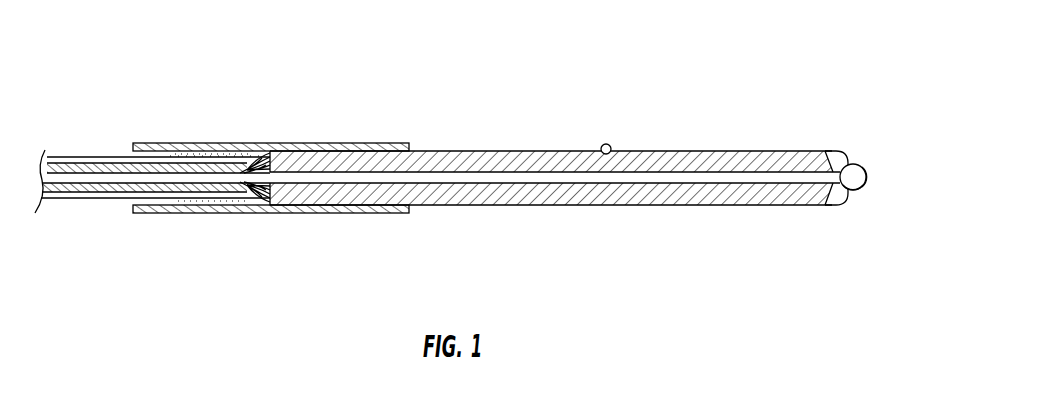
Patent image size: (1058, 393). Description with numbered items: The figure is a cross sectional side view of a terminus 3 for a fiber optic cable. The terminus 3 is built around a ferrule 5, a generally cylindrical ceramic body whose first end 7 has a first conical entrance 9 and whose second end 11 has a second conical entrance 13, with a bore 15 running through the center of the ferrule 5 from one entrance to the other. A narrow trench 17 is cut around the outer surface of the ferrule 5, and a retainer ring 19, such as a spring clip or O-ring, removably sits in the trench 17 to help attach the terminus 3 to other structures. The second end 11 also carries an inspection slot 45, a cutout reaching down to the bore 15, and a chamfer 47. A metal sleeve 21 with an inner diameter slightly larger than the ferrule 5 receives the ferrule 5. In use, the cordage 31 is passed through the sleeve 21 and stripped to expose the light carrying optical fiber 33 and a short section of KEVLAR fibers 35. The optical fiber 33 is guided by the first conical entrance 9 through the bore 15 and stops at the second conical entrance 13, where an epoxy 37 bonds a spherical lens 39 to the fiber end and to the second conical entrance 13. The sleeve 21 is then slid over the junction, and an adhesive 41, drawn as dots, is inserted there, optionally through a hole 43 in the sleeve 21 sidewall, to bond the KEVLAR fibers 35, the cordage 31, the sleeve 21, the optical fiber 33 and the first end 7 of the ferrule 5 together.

The terminus 3 is at (568, 74).
The ferrule 5 is at (508, 204).
The first end 7 is at (276, 230).
The first conical entrance 9 is at (265, 193).
The second end 11 is at (840, 238).
The second conical entrance 13 is at (856, 190).
The bore 15 is at (442, 204).
The trench 17 is at (592, 157).
The retainer ring 19 is at (606, 144).
The sleeve 21 is at (310, 147).
The cordage 31 is at (54, 150).
The optical fiber 33 is at (767, 158).
The KEVLAR fibers 35 is at (250, 163).
The epoxy 37 is at (858, 167).
The lens 39 is at (866, 173).
The adhesive 41 is at (230, 205).
The hole 43 is at (256, 152).
The inspection slot 45 is at (838, 158).
The chamfer 47 is at (850, 206).